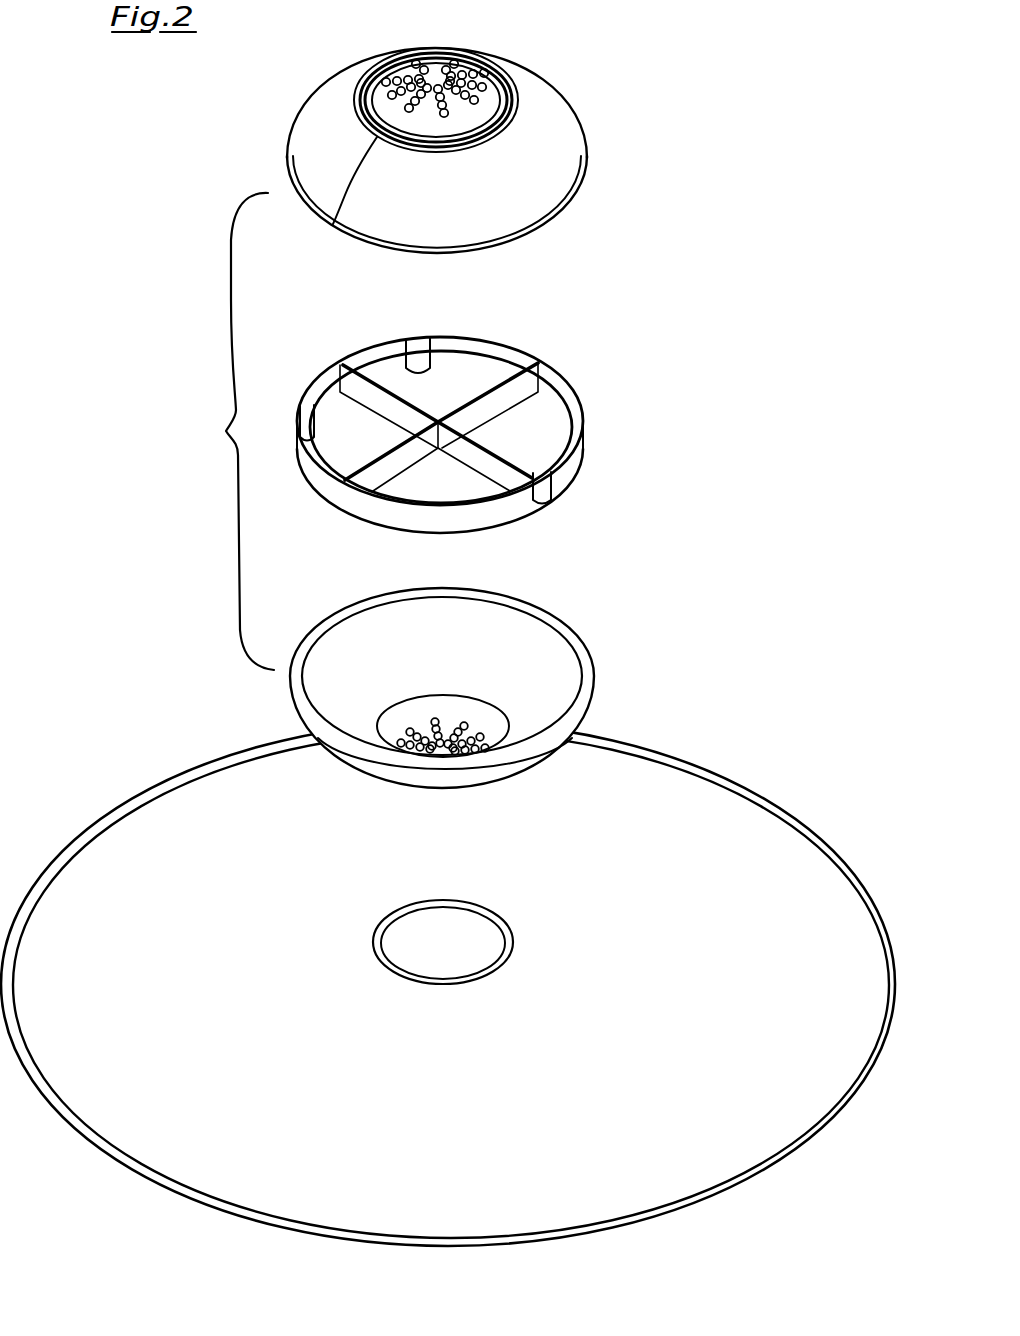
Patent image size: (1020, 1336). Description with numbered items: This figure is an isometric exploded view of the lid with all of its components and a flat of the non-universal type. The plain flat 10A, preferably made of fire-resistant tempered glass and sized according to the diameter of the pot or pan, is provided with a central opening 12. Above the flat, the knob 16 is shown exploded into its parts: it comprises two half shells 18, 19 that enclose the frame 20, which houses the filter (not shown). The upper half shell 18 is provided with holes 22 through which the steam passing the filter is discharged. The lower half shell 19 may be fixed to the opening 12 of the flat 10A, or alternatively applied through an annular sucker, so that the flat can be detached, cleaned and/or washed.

The plain flat 10A is at (448, 984).
The central opening 12 is at (490, 940).
The knob 16 is at (415, 403).
The upper half shell 18 is at (468, 136).
The lower half shell 19 is at (557, 653).
The frame 20 is at (553, 388).
The holes 22 is at (488, 68).